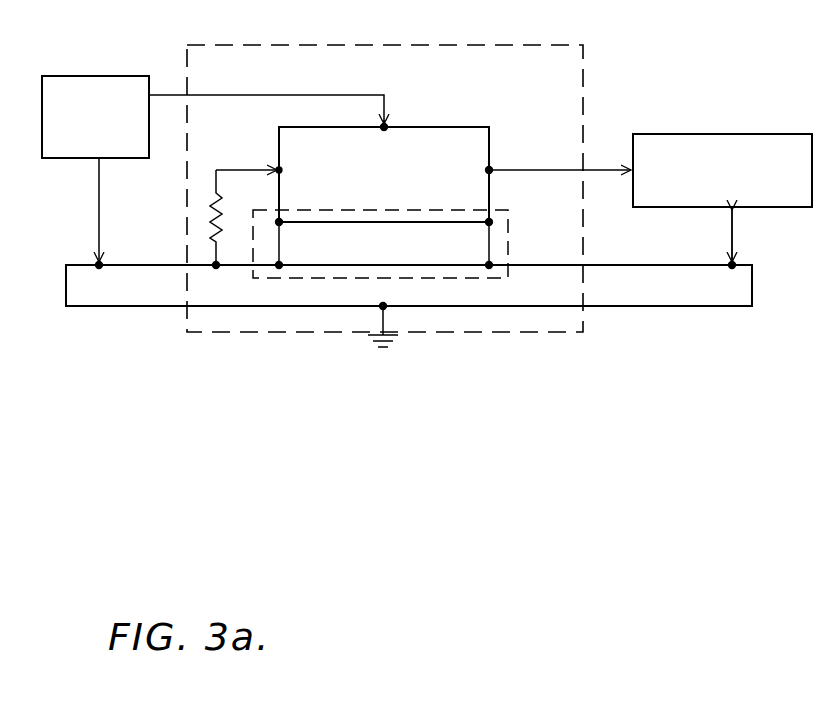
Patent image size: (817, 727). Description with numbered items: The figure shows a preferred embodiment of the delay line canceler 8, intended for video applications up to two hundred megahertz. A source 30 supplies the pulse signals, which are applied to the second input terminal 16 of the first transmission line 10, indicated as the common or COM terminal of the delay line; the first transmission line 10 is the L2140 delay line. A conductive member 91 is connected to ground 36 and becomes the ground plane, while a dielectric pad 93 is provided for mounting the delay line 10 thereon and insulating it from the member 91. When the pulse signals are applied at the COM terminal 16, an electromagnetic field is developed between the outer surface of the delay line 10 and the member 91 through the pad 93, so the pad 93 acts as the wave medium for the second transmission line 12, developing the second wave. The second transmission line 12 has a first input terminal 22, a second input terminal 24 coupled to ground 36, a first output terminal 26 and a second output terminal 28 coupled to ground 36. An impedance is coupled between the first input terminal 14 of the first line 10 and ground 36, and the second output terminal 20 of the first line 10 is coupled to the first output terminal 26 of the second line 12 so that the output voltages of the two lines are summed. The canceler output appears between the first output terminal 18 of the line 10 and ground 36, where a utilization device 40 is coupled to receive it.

The delay line canceler 8 is at (450, 45).
The source 30 is at (80, 76).
The first transmission line 10 is at (300, 127).
The second input terminal 16 is at (391, 120).
The second output terminal 20 is at (425, 108).
The first input terminal 14 is at (272, 170).
The first output terminal 18 is at (492, 170).
The first input terminal 22 is at (279, 222).
The second input terminal 24 is at (279, 265).
The first output terminal 26 is at (492, 218).
The second output terminal 28 is at (489, 265).
The second transmission line 12 is at (508, 240).
The dielectric pad 93 is at (320, 243).
The ground 36 is at (383, 306).
The device for utilizing the output 40 is at (740, 134).
The conductive member 91 is at (668, 306).